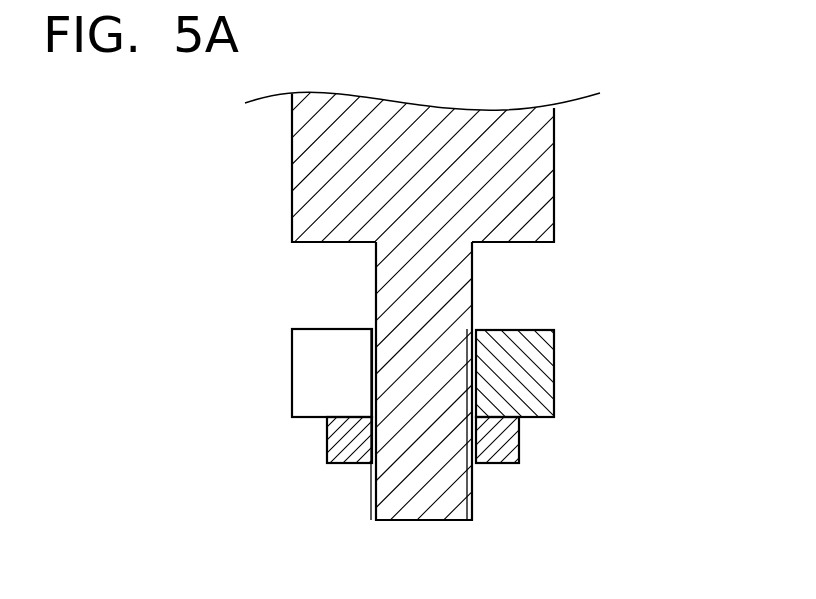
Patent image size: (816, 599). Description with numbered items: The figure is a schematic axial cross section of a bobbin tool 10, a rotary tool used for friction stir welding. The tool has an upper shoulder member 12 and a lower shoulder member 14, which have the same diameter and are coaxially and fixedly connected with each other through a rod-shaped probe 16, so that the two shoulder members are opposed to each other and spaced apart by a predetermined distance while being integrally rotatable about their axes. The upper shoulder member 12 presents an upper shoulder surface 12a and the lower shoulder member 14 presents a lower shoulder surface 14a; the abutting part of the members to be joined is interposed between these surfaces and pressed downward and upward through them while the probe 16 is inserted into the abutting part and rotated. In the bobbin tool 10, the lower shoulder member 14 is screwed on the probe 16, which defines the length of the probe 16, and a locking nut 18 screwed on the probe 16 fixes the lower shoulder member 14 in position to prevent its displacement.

The rotary tool 10 is at (232, 169).
The upper shoulder member 12 is at (540, 163).
The upper shoulder surface 12a is at (522, 243).
The lower shoulder member 14 is at (310, 378).
The lower shoulder surface 14a is at (523, 329).
The probe 16 is at (423, 500).
The locking nut 18 is at (512, 443).